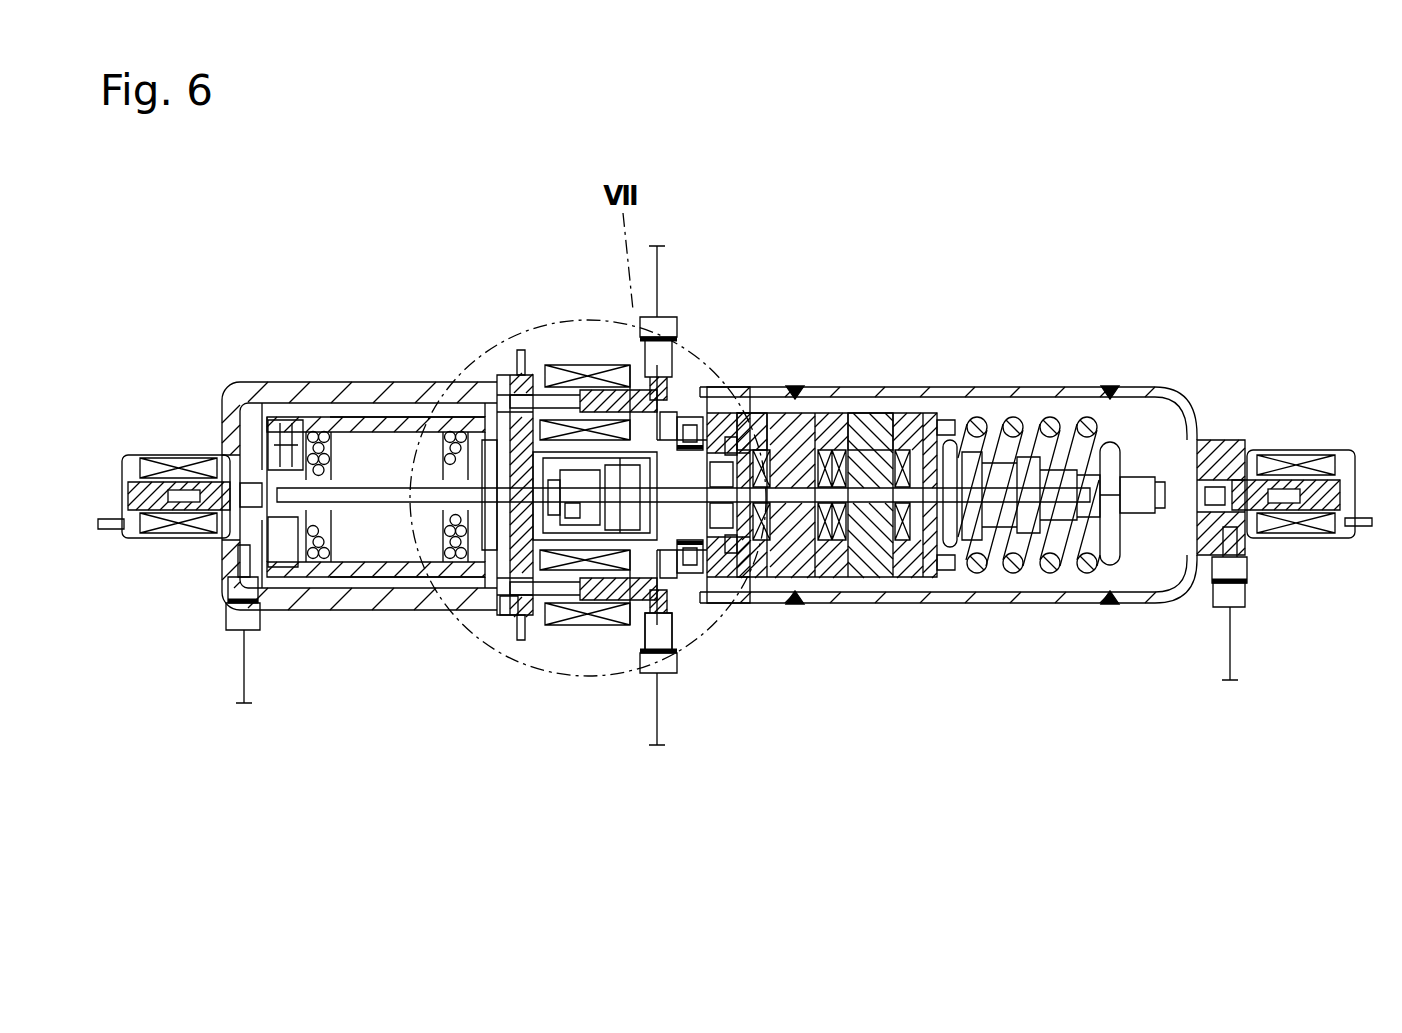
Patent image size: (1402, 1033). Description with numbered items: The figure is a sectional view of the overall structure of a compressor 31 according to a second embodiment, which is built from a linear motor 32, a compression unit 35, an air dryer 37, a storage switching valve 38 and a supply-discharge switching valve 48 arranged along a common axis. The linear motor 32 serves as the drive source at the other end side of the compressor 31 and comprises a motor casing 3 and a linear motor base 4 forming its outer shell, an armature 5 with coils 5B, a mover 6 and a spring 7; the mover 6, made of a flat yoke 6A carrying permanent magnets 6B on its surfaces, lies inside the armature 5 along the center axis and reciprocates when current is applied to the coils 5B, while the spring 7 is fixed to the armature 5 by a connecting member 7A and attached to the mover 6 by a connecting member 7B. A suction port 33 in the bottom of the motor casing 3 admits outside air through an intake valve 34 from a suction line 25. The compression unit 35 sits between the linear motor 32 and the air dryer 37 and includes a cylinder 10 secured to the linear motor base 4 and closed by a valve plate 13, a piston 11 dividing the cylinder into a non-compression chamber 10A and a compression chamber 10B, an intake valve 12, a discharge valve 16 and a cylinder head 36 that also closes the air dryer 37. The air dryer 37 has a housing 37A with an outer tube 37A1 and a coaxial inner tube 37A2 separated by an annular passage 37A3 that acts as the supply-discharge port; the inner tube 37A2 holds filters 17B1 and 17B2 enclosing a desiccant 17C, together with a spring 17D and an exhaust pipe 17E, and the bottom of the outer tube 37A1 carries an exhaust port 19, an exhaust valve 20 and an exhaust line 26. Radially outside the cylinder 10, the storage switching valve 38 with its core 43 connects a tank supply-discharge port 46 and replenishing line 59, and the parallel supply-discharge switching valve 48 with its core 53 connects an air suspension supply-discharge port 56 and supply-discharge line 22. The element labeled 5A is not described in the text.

The motor casing 3 is at (1032, 603).
The linear motor base 4 is at (715, 603).
The armature 5 is at (858, 579).
The stator 5A is at (795, 562).
The coils 5B is at (905, 565).
The mover 6 is at (990, 440).
The yoke 6A is at (858, 413).
The permanent magnets 6B is at (802, 412).
The spring 7 is at (1080, 577).
The connecting member 7A is at (952, 440).
The connecting member 7B is at (1120, 442).
The cylinder 10 is at (594, 455).
The non-compression chamber 10A is at (680, 416).
The compression chamber 10B is at (546, 365).
The piston 11 is at (598, 625).
The intake valve 12 is at (583, 625).
The valve plate 13 is at (554, 625).
The discharge valve 16 is at (515, 615).
The filter 17B1 is at (318, 577).
The filter 17B2 is at (455, 577).
The desiccant 17C is at (366, 577).
The spring 17D is at (478, 420).
The exhaust pipe 17E is at (332, 493).
The exhaust port 19 is at (250, 632).
The exhaust valve 20 is at (182, 470).
The supply-discharge line 22 is at (662, 736).
The suction line 25 is at (1232, 656).
The exhaust line 26 is at (243, 640).
The compressor 31 is at (405, 195).
The linear motor 32 is at (895, 340).
The suction port 33 is at (1248, 570).
The intake valve 34 is at (1300, 482).
The compression unit 35 is at (573, 333).
The cylinder head 36 is at (503, 376).
The air dryer 37 is at (355, 365).
The housing 37A is at (420, 470).
The outer tube 37A1 is at (383, 395).
The inner tube 37A2 is at (398, 577).
The annular passage 37A3 is at (290, 410).
The storage switching valve 38 is at (600, 388).
The core 43 is at (522, 350).
The tank supply-discharge port 46 is at (662, 324).
The supply-discharge switching valve 48 is at (647, 628).
The core 53 is at (562, 625).
The air suspension supply-discharge port 56 is at (652, 662).
The replenishing line 59 is at (662, 250).